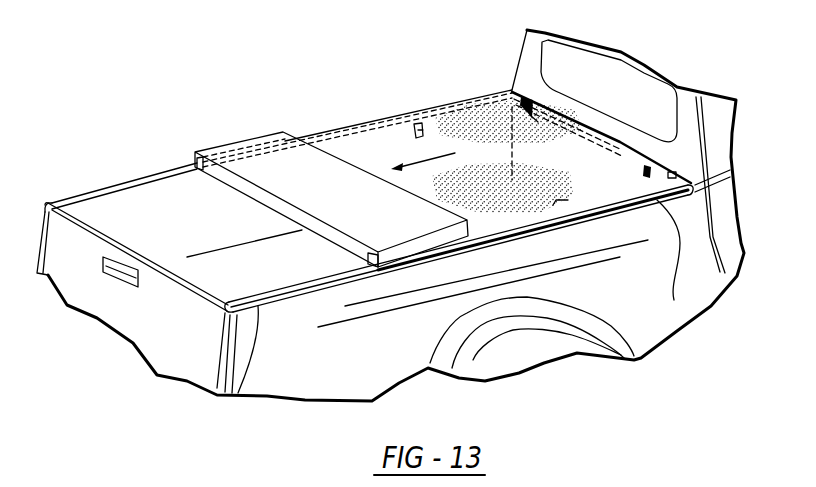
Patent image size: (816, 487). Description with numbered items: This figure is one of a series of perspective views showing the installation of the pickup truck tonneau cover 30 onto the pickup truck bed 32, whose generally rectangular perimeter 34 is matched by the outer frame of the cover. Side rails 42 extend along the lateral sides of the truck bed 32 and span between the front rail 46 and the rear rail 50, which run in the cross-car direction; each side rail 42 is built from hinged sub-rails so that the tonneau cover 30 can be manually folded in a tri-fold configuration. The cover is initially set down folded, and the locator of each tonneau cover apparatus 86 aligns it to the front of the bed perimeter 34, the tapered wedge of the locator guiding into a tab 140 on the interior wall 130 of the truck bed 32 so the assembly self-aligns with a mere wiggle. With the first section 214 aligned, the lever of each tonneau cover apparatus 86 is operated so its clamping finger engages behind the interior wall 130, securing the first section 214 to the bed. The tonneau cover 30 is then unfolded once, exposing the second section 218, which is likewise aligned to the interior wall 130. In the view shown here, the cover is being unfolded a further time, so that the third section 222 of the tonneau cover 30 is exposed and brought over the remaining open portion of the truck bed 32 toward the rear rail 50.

The tonneau cover 30 is at (387, 143).
The pickup truck bed 32 is at (160, 328).
The perimeter 34 is at (293, 305).
The side rails 42 is at (127, 182).
The front rail 46 is at (600, 165).
The rear rail 50 is at (76, 230).
The tonneau cover apparatus 86 is at (648, 170).
The interior wall 130 is at (90, 200).
The tab 140 is at (546, 110).
The first section 214 is at (674, 300).
The second section 218 is at (417, 253).
The third section 222 is at (250, 143).